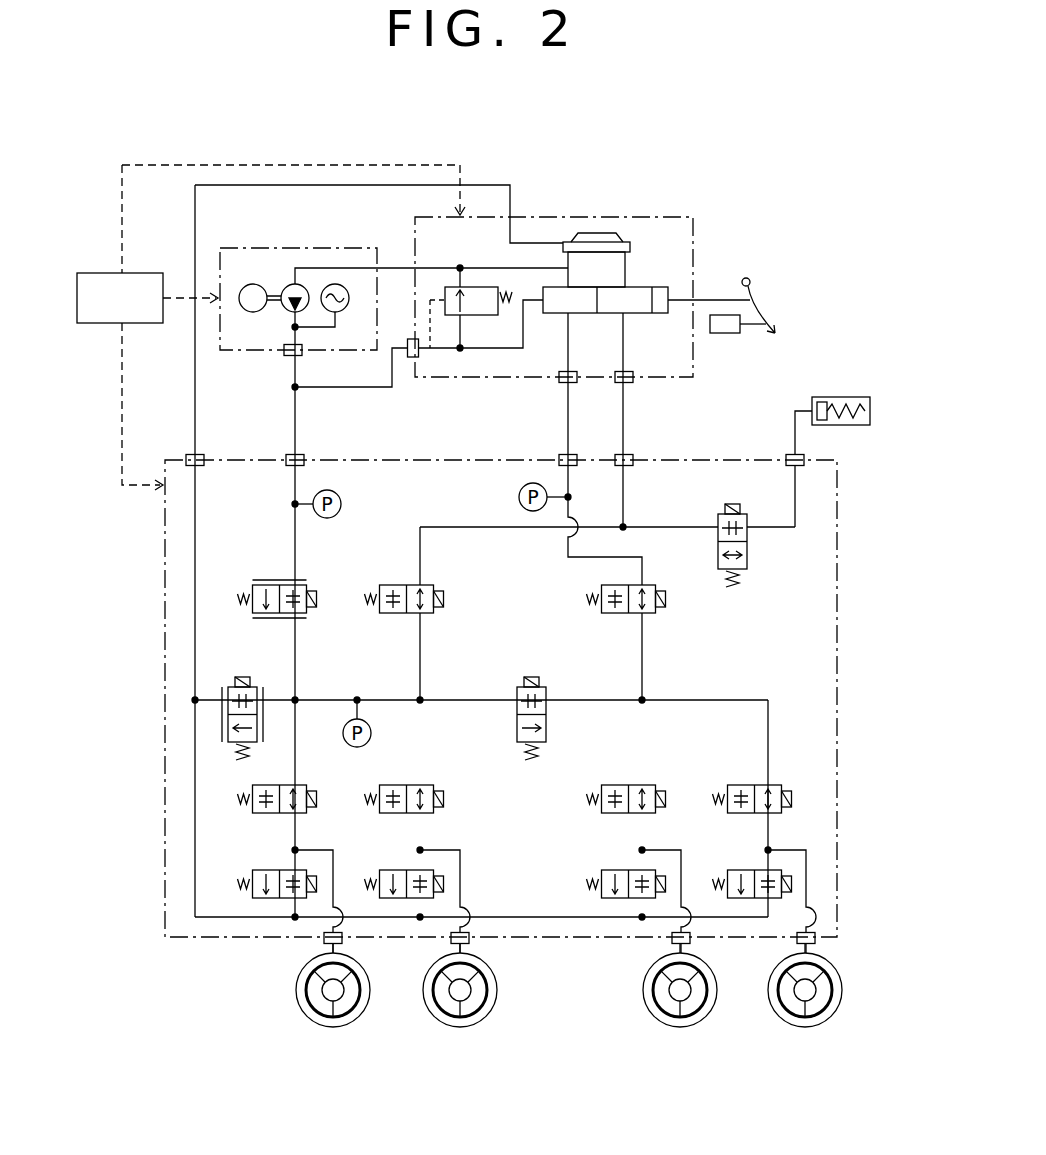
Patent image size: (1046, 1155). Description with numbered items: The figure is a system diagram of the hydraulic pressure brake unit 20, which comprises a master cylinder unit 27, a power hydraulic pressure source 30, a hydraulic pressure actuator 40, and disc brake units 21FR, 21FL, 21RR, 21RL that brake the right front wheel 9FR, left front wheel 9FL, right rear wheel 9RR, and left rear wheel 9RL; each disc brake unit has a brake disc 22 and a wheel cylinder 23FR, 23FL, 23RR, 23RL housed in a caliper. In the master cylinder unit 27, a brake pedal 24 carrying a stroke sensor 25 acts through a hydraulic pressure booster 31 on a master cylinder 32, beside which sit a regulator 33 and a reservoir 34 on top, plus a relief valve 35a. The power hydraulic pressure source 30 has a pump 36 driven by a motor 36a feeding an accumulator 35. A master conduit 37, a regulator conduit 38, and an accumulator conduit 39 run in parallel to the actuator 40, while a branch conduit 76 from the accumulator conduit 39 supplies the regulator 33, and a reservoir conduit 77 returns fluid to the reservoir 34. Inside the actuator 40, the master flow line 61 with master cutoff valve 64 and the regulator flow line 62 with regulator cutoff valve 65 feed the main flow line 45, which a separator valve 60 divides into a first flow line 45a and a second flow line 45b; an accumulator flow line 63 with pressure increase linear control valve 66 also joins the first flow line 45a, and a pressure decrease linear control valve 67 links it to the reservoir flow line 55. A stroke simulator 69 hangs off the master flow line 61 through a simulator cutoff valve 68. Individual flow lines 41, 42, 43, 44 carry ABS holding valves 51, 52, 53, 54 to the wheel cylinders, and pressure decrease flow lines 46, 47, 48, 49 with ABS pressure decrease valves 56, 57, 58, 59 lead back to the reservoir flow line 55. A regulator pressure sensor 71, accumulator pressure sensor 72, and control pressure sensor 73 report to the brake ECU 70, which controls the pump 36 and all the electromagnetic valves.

The hydraulic pressure brake unit 20 is at (732, 176).
The master cylinder unit 27 is at (582, 265).
The brake ECU 70 is at (88, 273).
The power hydraulic pressure source 30 is at (298, 285).
The motor 36a is at (257, 284).
The pump 36 is at (289, 312).
The accumulator 35 is at (340, 311).
The relief valve 35a is at (486, 287).
The reservoir 34 is at (601, 231).
The hydraulic pressure booster 31 is at (640, 302).
The regulator 33 is at (557, 313).
The master cylinder 32 is at (609, 313).
The brake pedal 24 is at (782, 331).
The stroke sensor 25 is at (726, 333).
The stroke simulator 69 is at (843, 397).
The hydraulic pressure actuator 40 is at (838, 501).
The reservoir conduit 77 is at (196, 400).
The accumulator conduit 39 is at (296, 418).
The branch conduit 76 is at (369, 388).
The regulator conduit 38 is at (565, 420).
The master conduit 37 is at (621, 420).
The accumulator pressure sensor 72 is at (340, 496).
The regulator pressure sensor 71 is at (519, 497).
The control pressure sensor 73 is at (372, 738).
The master flow line 61 is at (450, 527).
The regulator flow line 62 is at (584, 557).
The pressure increase linear control valve 66 is at (313, 607).
The master cutoff valve 64 is at (440, 607).
The regulator cutoff valve 65 is at (661, 607).
The simulator cutoff valve 68 is at (749, 556).
The pressure decrease linear control valve 67 is at (241, 678).
The accumulator flow line 63 is at (298, 648).
The separator valve 60 is at (548, 738).
The main flow line 45 is at (480, 780).
The first flow line 45a is at (320, 700).
The second flow line 45b is at (669, 703).
The ABS holding valve 51 is at (314, 784).
The ABS holding valve 52 is at (438, 784).
The ABS holding valve 53 is at (660, 784).
The ABS holding valve 54 is at (785, 784).
The pressure decrease flow line 46 is at (292, 860).
The pressure decrease flow line 47 is at (418, 860).
The pressure decrease flow line 48 is at (640, 860).
The pressure decrease flow line 49 is at (765, 860).
The reservoir flow line 55 is at (224, 917).
The ABS pressure decrease valve 56 is at (255, 872).
The ABS pressure decrease valve 57 is at (382, 872).
The ABS pressure decrease valve 58 is at (602, 872).
The ABS pressure decrease valve 59 is at (728, 872).
The individual flow line 41 is at (315, 850).
The individual flow line 42 is at (442, 850).
The individual flow line 43 is at (663, 850).
The individual flow line 44 is at (787, 850).
The right front wheel 9FR is at (288, 1031).
The left front wheel 9FL is at (441, 1022).
The right rear wheel 9RR is at (634, 1024).
The left rear wheel 9RL is at (770, 1022).
The wheel cylinder 23FR is at (312, 960).
The wheel cylinder 23FL is at (441, 961).
The wheel cylinder 23RR is at (659, 960).
The wheel cylinder 23RL is at (786, 961).
The disc brake unit 21FR is at (302, 1007).
The disc brake unit 21FL is at (429, 1007).
The disc brake unit 21RR is at (649, 1007).
The disc brake unit 21RL is at (774, 1007).
The brake disc 22 is at (333, 1017).